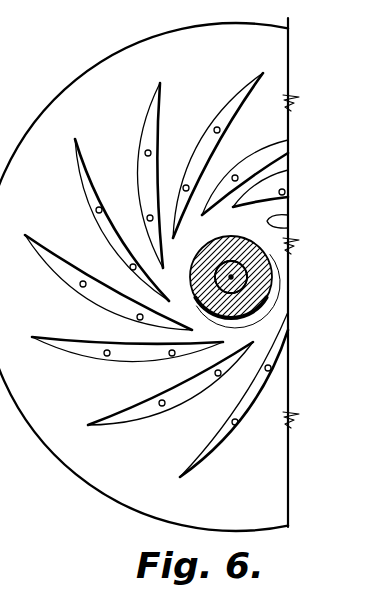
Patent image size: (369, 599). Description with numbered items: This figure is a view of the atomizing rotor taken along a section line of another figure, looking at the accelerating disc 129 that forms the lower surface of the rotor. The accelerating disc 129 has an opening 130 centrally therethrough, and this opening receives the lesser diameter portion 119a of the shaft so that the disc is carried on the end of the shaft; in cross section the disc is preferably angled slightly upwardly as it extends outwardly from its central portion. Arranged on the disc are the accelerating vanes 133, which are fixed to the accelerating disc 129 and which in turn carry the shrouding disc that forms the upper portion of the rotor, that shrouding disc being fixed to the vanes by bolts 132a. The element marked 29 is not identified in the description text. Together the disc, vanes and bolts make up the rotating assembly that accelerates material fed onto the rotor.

The accelerating disc 129 is at (90, 466).
The opening 130 is at (211, 238).
The lesser diameter portion of shaft 119a is at (247, 283).
The shaft 29 is at (256, 295).
The accelerating vanes 133 is at (117, 406).
The bolts 132a is at (163, 406).